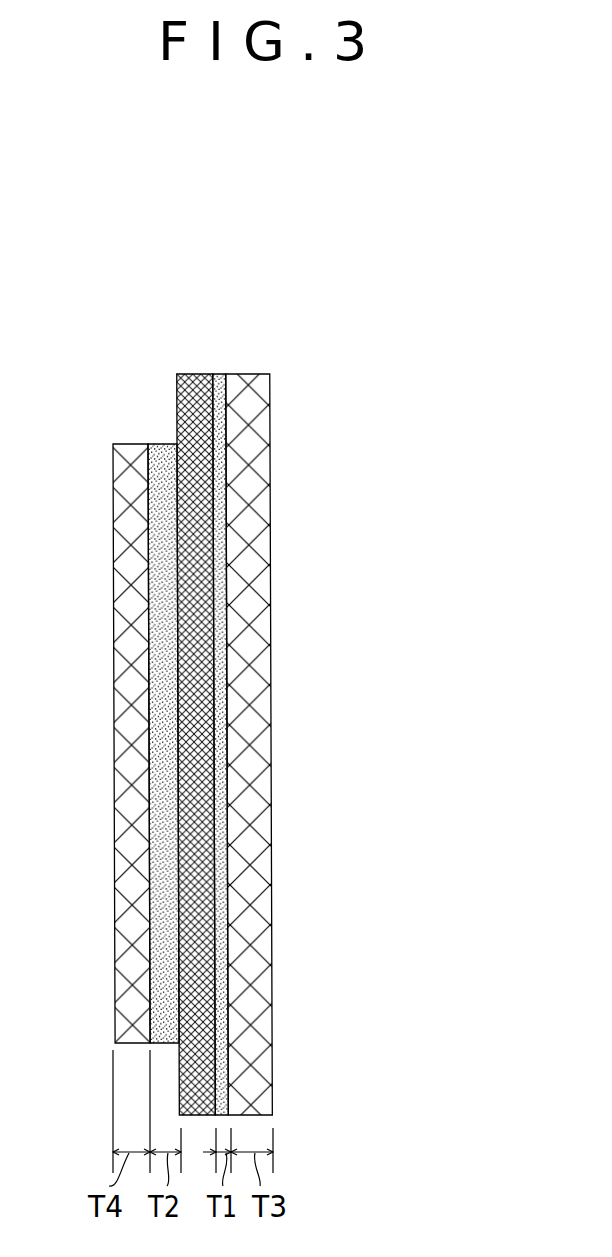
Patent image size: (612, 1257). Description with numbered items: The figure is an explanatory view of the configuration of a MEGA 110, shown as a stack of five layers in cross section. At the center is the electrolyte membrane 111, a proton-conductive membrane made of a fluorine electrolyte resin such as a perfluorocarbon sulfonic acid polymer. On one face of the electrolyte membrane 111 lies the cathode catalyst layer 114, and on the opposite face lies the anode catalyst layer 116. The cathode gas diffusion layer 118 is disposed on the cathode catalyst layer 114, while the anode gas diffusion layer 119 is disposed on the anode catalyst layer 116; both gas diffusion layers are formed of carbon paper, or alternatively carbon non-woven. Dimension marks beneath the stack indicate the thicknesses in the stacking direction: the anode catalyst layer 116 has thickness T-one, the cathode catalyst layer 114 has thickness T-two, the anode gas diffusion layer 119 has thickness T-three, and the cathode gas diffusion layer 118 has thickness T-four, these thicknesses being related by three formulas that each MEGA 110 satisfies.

The MEGA 110 is at (373, 315).
The electrolyte membrane 111 is at (197, 374).
The cathode catalyst layer 114 is at (160, 444).
The anode catalyst layer 116 is at (221, 374).
The cathode gas diffusion layer 118 is at (141, 444).
The anode gas diffusion layer 119 is at (256, 374).